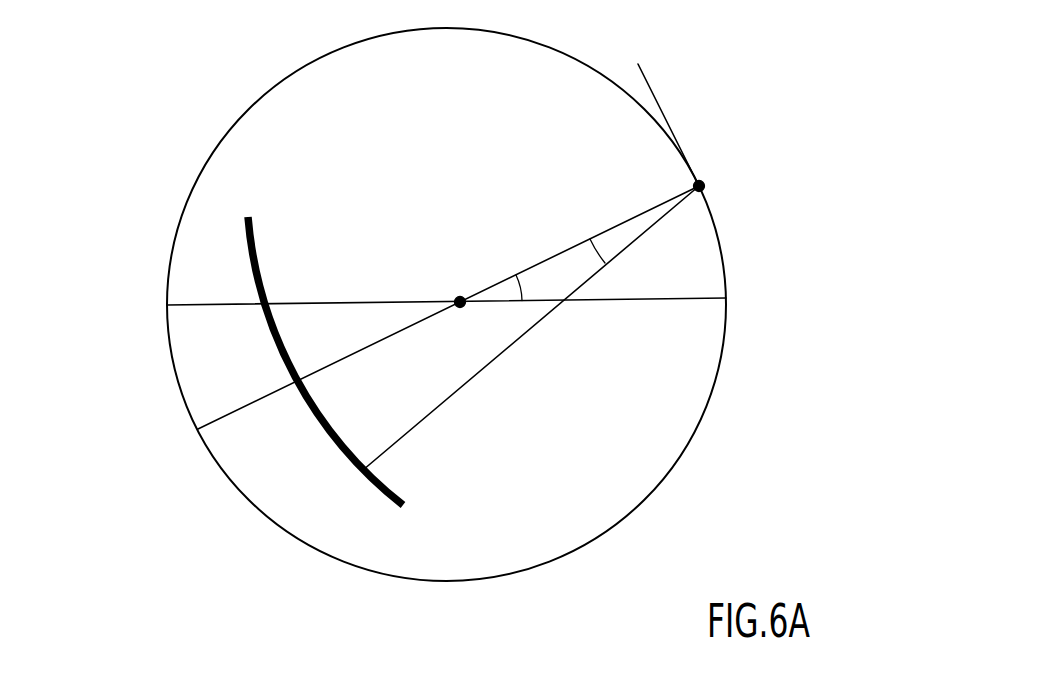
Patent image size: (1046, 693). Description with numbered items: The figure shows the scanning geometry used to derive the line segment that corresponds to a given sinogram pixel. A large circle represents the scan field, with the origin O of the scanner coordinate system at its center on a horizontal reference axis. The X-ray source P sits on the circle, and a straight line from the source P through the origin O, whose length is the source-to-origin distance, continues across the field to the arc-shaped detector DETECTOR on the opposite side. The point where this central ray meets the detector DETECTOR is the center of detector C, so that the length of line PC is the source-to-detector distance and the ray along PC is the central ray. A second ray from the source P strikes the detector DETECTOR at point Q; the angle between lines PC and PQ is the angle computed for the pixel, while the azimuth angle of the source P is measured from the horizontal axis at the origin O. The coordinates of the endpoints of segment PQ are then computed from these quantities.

The detector DETECTOR is at (236, 265).
The X-ray source P is at (548, 267).
The origin O is at (448, 241).
The center of detector C is at (165, 503).
The endpoint of line segment PQ on the detector Q is at (358, 483).